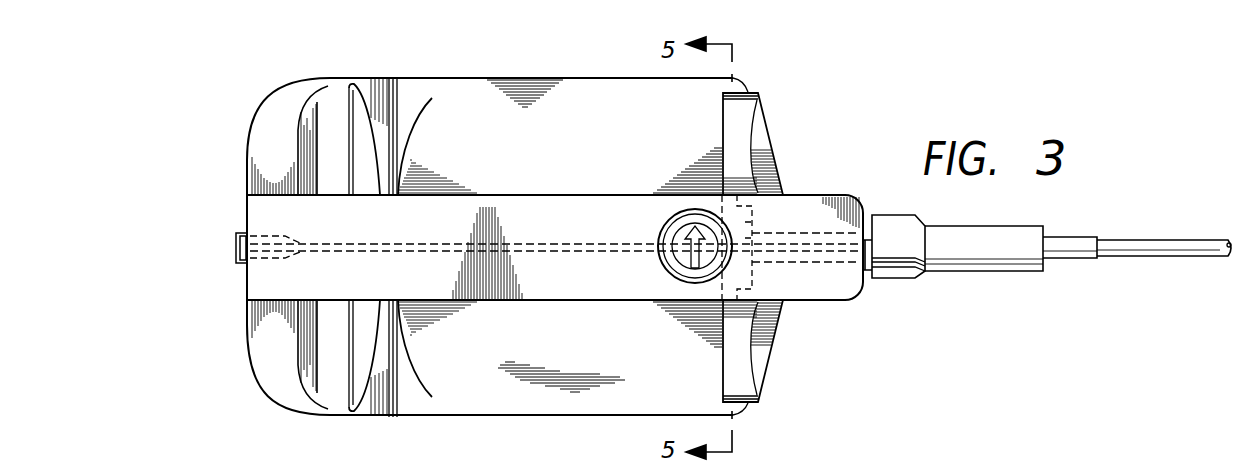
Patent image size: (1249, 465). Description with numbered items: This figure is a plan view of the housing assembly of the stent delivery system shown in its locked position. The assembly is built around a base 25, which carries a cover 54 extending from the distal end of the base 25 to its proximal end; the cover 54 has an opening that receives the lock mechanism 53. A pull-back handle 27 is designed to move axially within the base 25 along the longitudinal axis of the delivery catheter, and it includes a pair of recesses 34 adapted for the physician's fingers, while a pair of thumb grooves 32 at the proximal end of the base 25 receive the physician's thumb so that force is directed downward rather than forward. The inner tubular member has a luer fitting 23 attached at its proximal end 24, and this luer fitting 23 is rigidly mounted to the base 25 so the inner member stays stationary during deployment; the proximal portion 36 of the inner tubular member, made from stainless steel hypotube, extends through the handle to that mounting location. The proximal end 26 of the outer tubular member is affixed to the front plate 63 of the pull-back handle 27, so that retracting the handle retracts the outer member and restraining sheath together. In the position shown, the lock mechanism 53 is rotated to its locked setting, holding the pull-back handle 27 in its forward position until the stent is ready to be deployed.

The luer fitting 23 is at (232, 246).
The proximal end 24 is at (303, 257).
The base 25 is at (478, 405).
The proximal end 26 is at (752, 233).
The pull-back handle 27 is at (745, 378).
The thumb grooves 32 is at (327, 122).
The recesses 34 is at (742, 124).
The proximal portion 36 is at (562, 248).
The lock mechanism 53 is at (716, 266).
The cover 54 is at (548, 215).
The front plate 63 is at (752, 228).